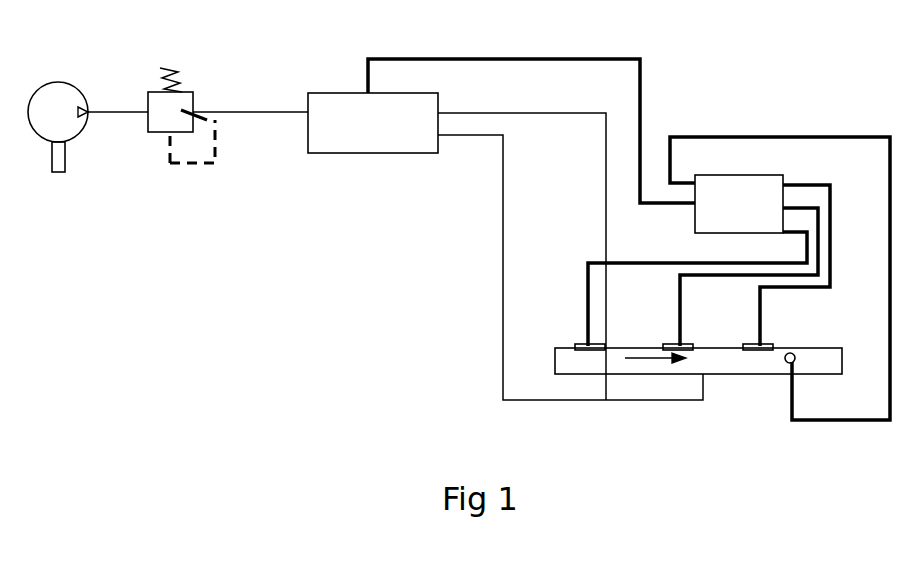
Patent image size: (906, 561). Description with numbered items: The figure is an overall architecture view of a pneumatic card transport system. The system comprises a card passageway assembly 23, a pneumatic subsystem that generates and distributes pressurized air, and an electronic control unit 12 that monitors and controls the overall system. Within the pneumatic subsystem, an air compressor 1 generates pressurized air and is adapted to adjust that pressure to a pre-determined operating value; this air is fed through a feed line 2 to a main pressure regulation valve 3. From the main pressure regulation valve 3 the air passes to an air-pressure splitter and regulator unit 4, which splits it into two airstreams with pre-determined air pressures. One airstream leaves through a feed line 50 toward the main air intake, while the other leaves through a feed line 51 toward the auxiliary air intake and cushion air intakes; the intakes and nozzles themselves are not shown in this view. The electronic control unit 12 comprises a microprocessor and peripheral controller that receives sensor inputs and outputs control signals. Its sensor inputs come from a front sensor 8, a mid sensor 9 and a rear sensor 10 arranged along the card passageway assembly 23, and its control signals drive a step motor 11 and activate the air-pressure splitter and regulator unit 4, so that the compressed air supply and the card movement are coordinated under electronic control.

The air compressor 1 is at (67, 128).
The feed line 2 is at (125, 112).
The main pressure regulation valve 3 is at (193, 92).
The air-pressure splitter and regulator unit 4 is at (365, 140).
The feed line 50 is at (606, 185).
The feed line 51 is at (503, 272).
The electronic control unit 12 is at (693, 226).
The front sensor 8 is at (580, 344).
The mid sensor 9 is at (672, 344).
The rear sensor 10 is at (752, 344).
The step motor 11 is at (788, 365).
The card passageway assembly 23 is at (742, 376).